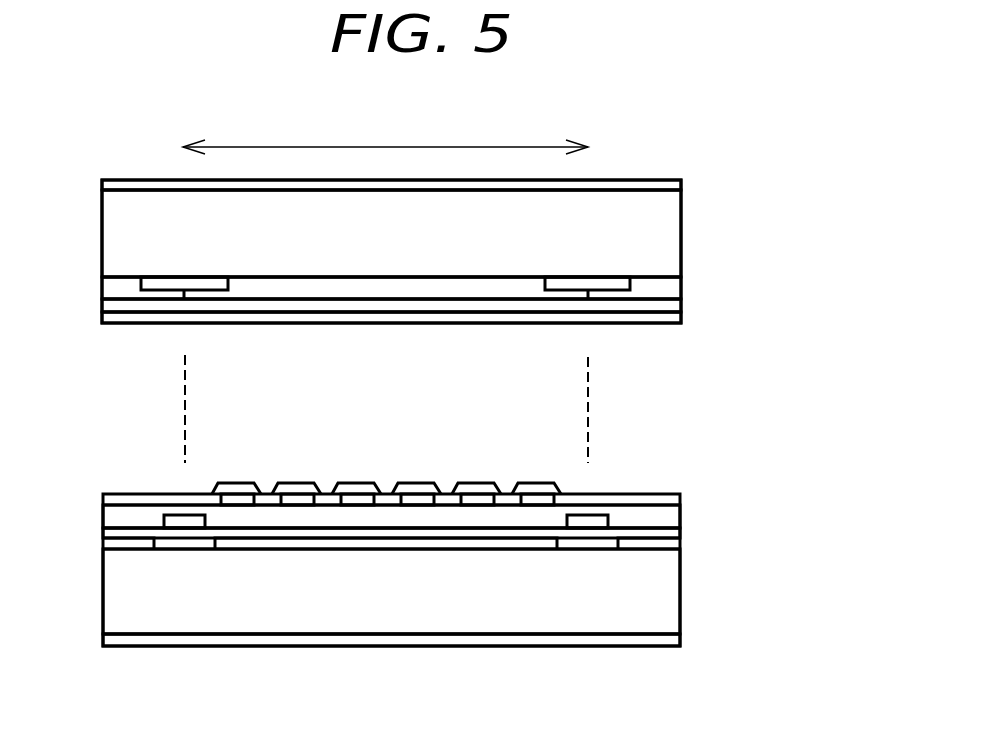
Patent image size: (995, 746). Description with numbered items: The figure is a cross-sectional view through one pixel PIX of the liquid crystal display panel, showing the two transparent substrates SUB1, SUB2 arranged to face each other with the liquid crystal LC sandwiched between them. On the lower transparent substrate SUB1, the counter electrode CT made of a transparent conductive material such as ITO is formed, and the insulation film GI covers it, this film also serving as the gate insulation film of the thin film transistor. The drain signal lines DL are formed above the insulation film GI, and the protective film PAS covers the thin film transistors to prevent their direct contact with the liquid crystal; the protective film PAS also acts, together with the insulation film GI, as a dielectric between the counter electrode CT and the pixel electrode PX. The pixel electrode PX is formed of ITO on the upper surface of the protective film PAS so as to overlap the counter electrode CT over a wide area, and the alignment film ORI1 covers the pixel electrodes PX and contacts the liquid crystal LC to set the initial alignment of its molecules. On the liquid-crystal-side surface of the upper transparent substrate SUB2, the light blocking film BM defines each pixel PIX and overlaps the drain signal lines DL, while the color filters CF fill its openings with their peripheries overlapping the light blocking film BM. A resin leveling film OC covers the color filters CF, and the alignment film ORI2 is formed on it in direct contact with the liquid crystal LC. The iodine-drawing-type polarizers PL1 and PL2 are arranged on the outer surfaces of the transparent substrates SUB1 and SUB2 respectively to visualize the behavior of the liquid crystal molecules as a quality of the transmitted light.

The polarizer PL2 is at (141, 183).
The transparent substrate SUB2 is at (614, 203).
The pixel PIX is at (385, 134).
The light blocking film BM is at (165, 286).
The color filter CF is at (263, 288).
The leveling film OC is at (660, 307).
The alignment film ORI2 is at (369, 320).
The liquid crystal LC is at (386, 409).
The alignment film ORI1 is at (452, 493).
The pixel electrode PX is at (297, 497).
The protective film PAS is at (672, 513).
The drain signal line DL is at (177, 522).
The insulation film GI is at (292, 533).
The counter electrode CT is at (387, 543).
The transparent substrate SUB1 is at (207, 610).
The polarizer PL1 is at (487, 640).